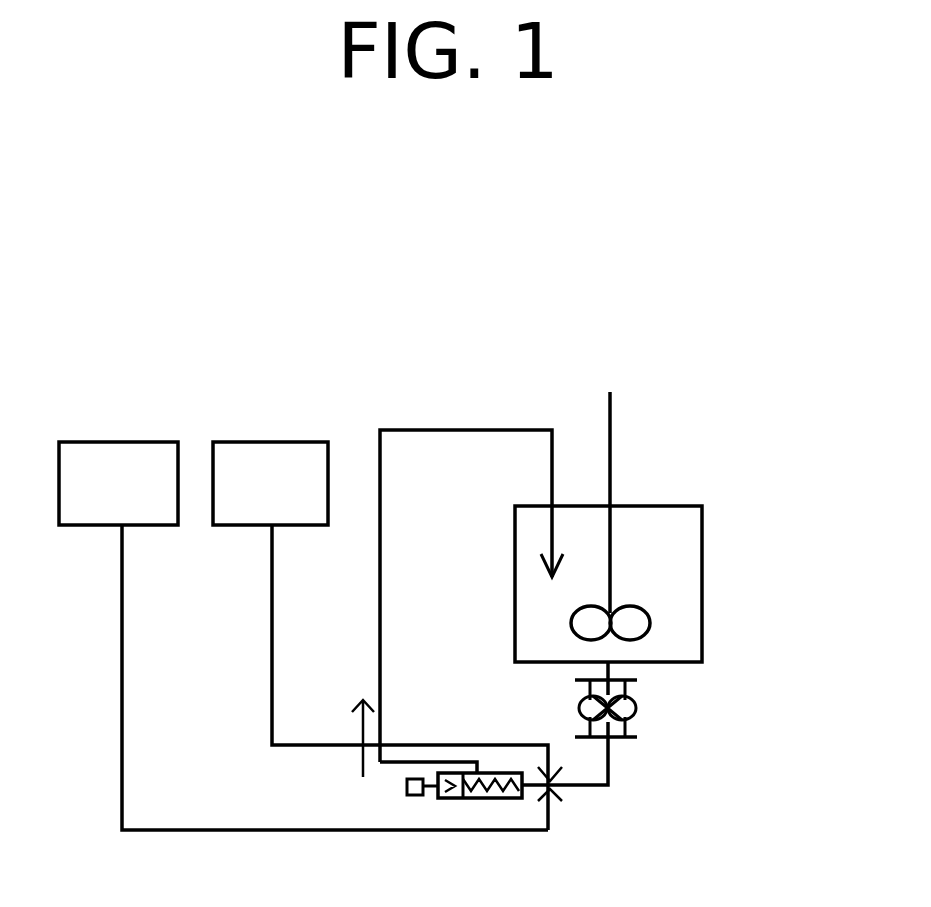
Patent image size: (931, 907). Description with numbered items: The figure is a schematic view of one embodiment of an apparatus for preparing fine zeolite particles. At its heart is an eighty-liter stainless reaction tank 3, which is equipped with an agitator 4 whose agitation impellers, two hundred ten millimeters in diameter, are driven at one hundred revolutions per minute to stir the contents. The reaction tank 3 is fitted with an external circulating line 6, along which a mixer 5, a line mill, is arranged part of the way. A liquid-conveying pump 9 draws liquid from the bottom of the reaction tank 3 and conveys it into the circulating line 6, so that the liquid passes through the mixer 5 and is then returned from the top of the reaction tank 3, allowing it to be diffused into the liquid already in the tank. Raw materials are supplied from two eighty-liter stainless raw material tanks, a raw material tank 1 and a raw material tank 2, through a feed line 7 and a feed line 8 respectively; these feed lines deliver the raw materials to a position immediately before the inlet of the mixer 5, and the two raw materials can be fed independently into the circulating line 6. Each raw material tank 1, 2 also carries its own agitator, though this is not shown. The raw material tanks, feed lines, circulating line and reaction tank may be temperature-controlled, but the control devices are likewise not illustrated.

The raw material tank 1 is at (85, 458).
The raw material tank 2 is at (237, 466).
The reaction tank 3 is at (675, 562).
The agitator 4 is at (612, 430).
The mixer 5 is at (488, 798).
The circulating line 6 is at (410, 428).
The feed line 7 is at (118, 673).
The feed line 8 is at (268, 590).
The liquid-conveying pump 9 is at (640, 705).